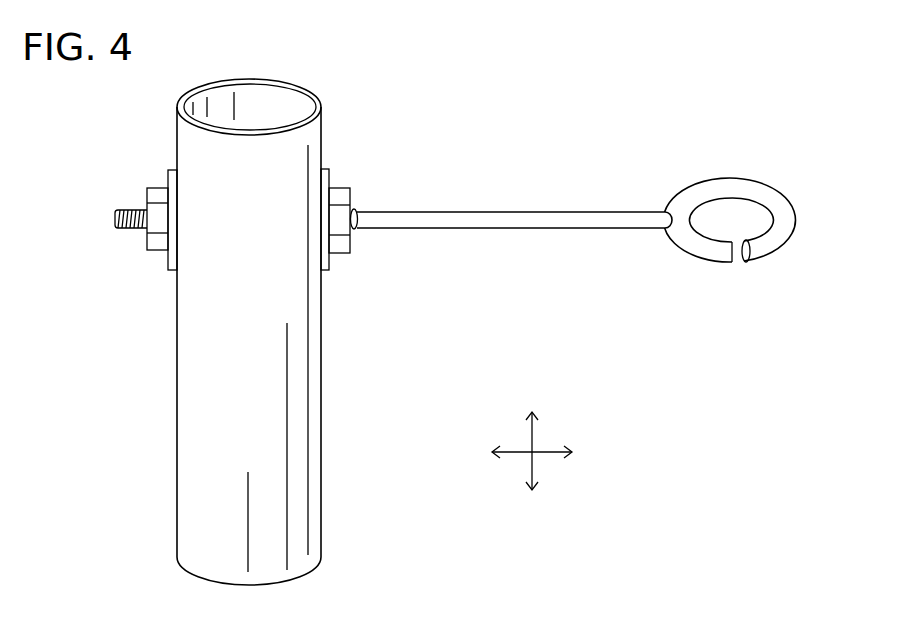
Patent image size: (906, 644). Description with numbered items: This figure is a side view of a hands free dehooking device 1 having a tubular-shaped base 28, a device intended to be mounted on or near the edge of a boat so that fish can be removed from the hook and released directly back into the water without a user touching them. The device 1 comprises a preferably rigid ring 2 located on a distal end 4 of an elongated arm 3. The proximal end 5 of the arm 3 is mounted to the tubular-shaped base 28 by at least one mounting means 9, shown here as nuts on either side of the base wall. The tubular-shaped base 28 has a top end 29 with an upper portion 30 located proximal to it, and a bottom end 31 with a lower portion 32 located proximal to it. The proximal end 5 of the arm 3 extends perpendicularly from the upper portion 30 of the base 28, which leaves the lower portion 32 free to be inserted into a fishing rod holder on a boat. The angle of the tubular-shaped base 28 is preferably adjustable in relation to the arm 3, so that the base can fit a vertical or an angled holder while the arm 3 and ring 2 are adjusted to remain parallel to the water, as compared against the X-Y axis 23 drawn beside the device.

The hands free dehooking device 1 is at (553, 203).
The ring 2 is at (738, 190).
The arm 3 is at (512, 241).
The distal end 4 is at (661, 230).
The proximal end 5 is at (122, 229).
The mounting means 9 is at (153, 251).
The X-Y axis 23 is at (532, 452).
The tubular-shaped base 28 is at (213, 331).
The top end 29 is at (274, 82).
The upper portion 30 is at (192, 138).
The bottom end 31 is at (206, 580).
The lower portion 32 is at (190, 553).